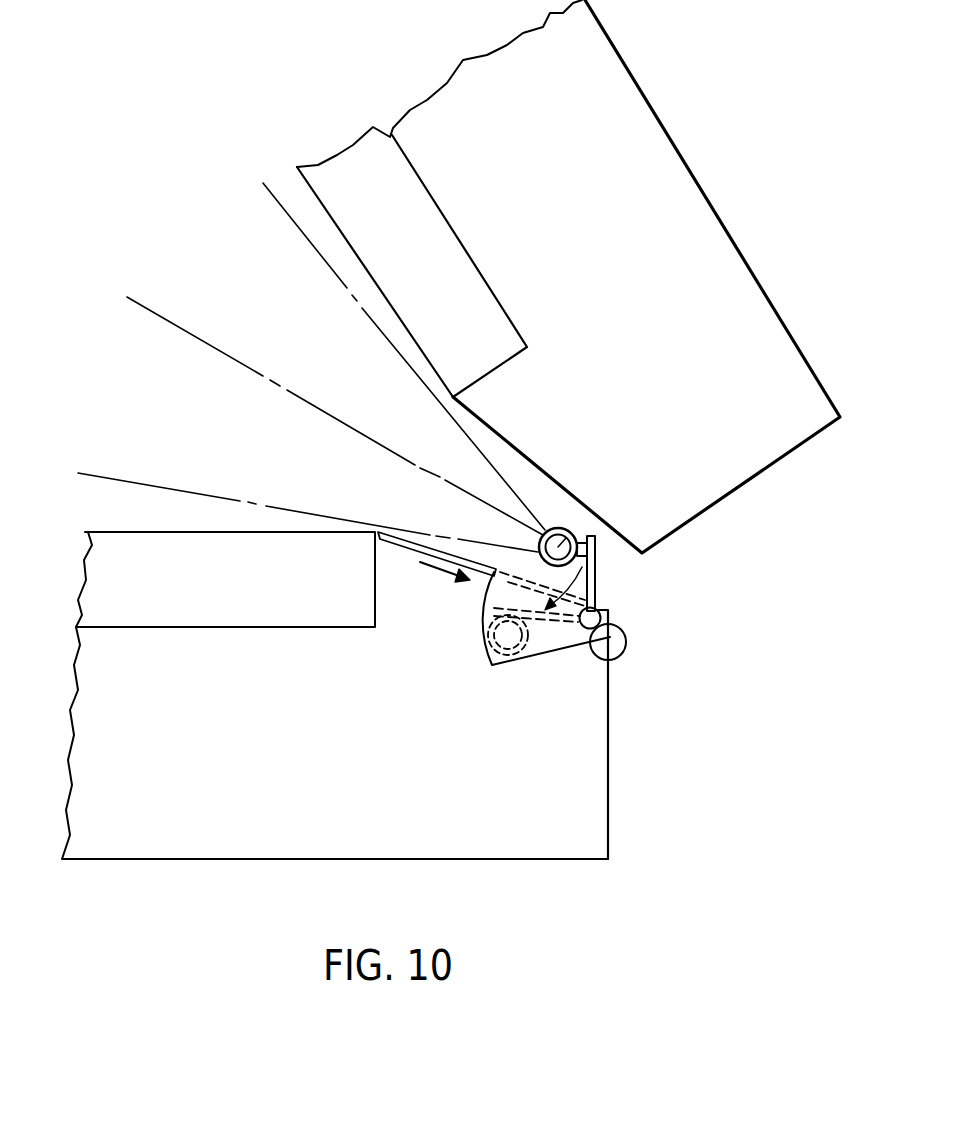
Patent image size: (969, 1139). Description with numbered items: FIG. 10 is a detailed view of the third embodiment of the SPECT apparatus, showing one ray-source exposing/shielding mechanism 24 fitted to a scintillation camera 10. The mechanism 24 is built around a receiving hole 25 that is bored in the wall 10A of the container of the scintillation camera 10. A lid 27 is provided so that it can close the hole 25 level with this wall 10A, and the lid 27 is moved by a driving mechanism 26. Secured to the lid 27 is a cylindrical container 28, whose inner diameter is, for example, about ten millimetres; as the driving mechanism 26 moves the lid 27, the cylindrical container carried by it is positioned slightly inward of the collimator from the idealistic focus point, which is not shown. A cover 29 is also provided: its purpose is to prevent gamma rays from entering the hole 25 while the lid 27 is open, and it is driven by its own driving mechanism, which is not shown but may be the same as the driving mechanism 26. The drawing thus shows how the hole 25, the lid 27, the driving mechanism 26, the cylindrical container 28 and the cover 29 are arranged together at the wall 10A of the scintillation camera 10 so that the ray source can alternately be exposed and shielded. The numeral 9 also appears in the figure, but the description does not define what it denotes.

The sheet 9 is at (497, 313).
The scintillation camera 10 is at (705, 200).
The wall 10A is at (603, 707).
The ray-source exposing/shielding mechanism 24 is at (641, 631).
The receiving hole 25 is at (543, 643).
The driving mechanism 26 is at (626, 650).
The lid 27 is at (597, 568).
The cylindrical container 28 is at (565, 527).
The cover 29 is at (483, 572).